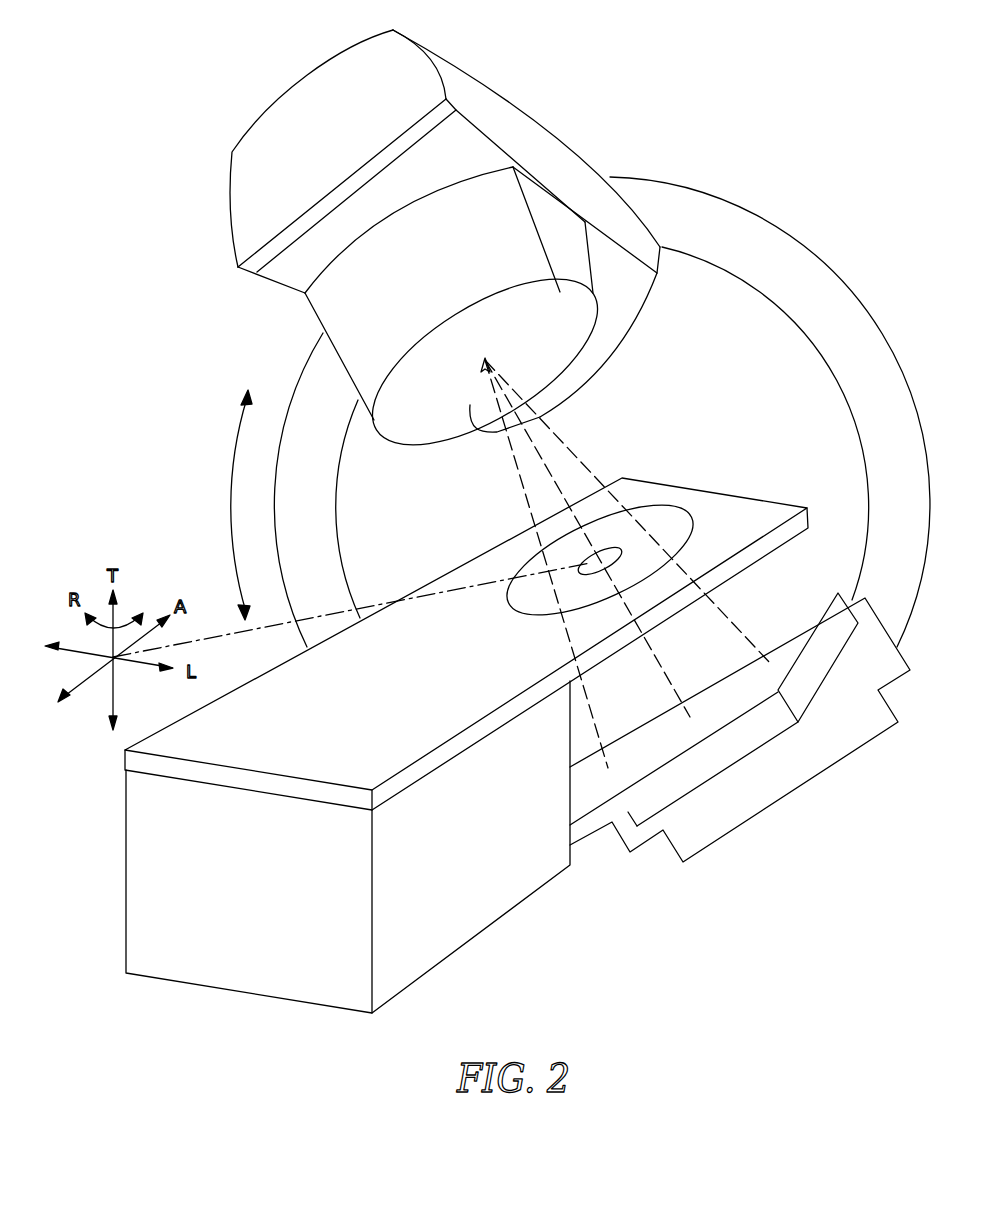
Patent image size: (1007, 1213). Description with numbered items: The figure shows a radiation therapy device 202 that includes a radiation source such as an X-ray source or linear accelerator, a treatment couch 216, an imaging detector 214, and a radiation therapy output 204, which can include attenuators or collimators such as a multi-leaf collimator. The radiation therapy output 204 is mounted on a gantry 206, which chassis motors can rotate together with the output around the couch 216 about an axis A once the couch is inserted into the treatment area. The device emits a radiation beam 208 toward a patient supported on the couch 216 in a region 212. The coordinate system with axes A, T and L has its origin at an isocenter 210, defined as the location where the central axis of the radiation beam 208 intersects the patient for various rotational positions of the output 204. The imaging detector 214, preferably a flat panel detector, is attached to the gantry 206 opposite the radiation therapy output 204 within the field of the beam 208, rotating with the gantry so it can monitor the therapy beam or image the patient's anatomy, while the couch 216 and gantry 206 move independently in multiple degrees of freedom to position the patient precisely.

The radiation therapy device 202 is at (259, 68).
The radiation therapy output 204 is at (332, 315).
The gantry 206 is at (843, 322).
The radiation beam 208 is at (578, 460).
The isocenter 210 is at (590, 560).
The region 212 is at (667, 512).
The imaging detector 214 is at (787, 645).
The couch 216 is at (207, 728).